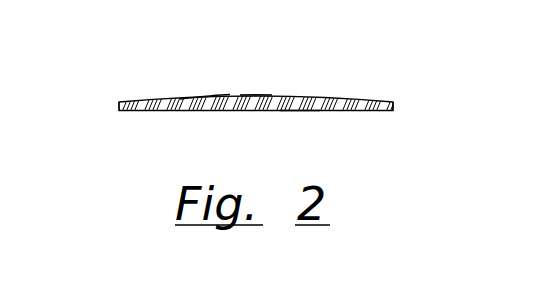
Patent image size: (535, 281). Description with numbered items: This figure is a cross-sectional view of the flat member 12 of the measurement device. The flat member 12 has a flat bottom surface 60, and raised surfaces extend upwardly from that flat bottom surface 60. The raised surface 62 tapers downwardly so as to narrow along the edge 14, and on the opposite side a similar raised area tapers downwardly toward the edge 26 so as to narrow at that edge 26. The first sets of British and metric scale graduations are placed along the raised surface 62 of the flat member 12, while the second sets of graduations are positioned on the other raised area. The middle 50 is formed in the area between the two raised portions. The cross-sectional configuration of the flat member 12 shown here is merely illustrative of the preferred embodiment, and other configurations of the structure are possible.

The flat member 12 is at (360, 103).
The edge 14 is at (118, 104).
The edge 26 is at (394, 107).
The middle 50 is at (258, 95).
The flat bottom surface 60 is at (298, 112).
The raised surface 62 is at (203, 100).